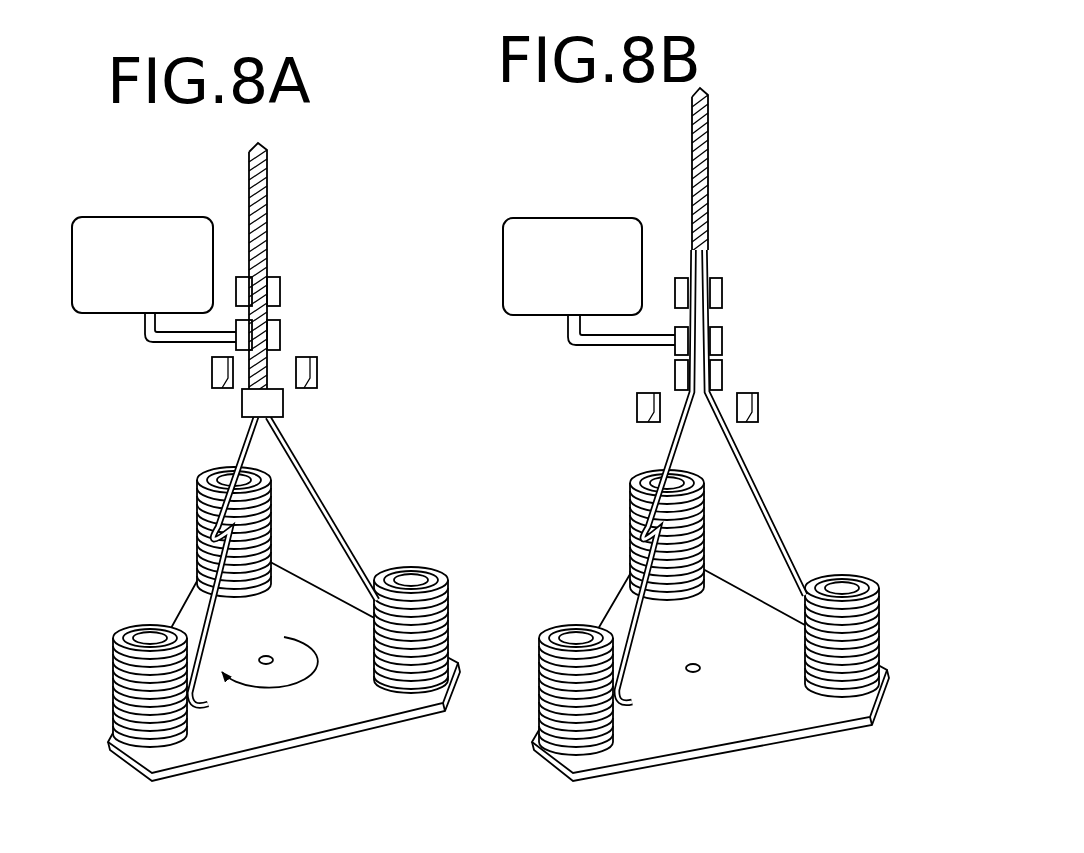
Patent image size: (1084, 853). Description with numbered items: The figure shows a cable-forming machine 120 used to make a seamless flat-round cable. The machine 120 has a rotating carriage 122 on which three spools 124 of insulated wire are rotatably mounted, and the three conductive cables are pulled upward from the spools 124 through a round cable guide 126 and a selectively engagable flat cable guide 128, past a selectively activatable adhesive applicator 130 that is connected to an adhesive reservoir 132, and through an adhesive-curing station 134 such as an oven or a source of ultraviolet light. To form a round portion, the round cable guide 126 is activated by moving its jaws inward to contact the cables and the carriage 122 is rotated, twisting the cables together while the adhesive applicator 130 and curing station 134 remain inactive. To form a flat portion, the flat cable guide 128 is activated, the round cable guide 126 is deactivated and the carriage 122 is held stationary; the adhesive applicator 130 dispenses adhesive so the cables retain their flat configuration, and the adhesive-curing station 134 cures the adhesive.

In FIG. 8A, the cable-forming machine 120 is at (170, 197).
In FIG. 8B, the cable-forming machine 120 is at (612, 188).
In FIG. 8A, the rotating carriage 122 is at (345, 700).
In FIG. 8B, the rotating carriage 122 is at (770, 715).
In FIG. 8A, the spools 124 is at (212, 486).
In FIG. 8B, the spools 124 is at (856, 575).
In FIG. 8A, the round cable guide 126 is at (283, 410).
In FIG. 8B, the round cable guide 126 is at (758, 404).
In FIG. 8A, the flat cable guide 128 is at (314, 373).
In FIG. 8B, the flat cable guide 128 is at (723, 375).
In FIG. 8A, the adhesive applicator 130 is at (277, 335).
In FIG. 8B, the adhesive applicator 130 is at (722, 345).
In FIG. 8A, the adhesive reservoir 132 is at (77, 224).
In FIG. 8B, the adhesive reservoir 132 is at (498, 248).
In FIG. 8A, the adhesive-curing station 134 is at (280, 290).
In FIG. 8B, the adhesive-curing station 134 is at (722, 292).